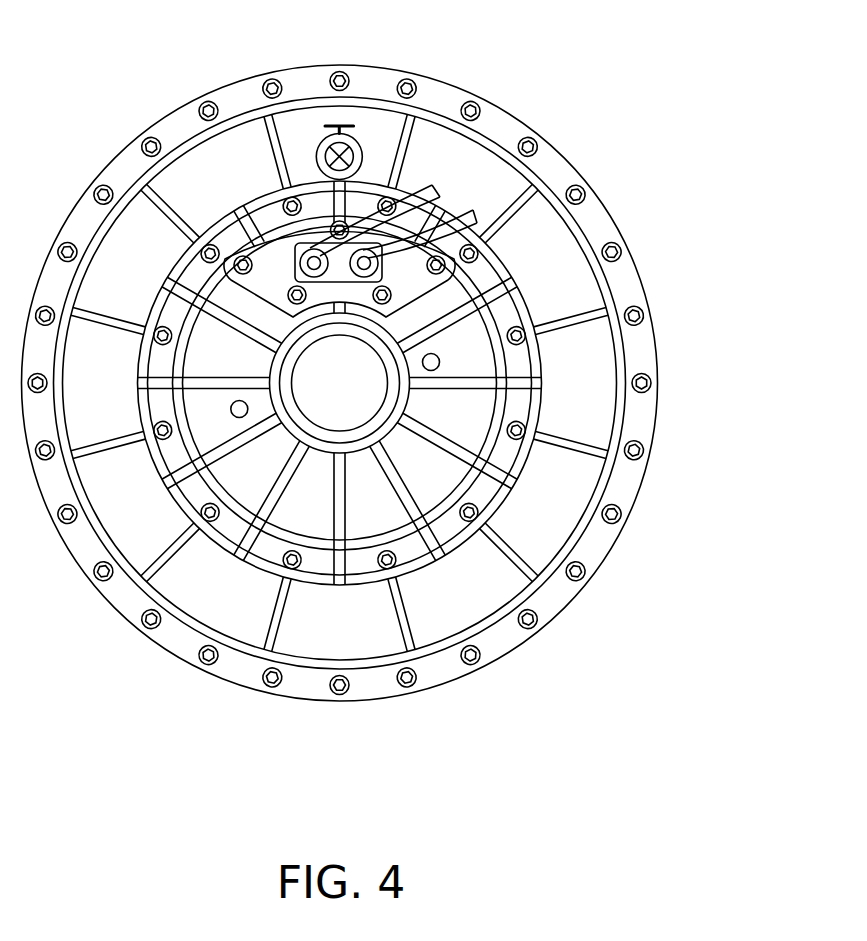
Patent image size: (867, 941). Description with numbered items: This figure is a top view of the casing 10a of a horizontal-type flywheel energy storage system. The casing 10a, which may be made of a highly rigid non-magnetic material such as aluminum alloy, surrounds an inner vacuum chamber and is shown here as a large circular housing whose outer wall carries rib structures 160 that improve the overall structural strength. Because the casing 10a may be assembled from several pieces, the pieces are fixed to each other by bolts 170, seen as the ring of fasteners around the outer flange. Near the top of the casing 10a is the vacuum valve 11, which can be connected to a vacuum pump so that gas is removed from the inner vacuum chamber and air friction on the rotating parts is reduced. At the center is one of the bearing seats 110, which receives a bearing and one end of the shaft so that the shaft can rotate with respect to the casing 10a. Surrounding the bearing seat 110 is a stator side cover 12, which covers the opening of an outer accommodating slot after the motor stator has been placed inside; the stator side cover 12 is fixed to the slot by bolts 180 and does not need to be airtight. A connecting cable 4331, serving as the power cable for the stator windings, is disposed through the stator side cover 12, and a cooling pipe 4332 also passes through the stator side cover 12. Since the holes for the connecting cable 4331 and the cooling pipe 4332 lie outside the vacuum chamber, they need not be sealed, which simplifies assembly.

The casing 10a is at (580, 177).
The vacuum valve 11 is at (355, 140).
The stator side cover 12 is at (370, 517).
The bearing seat 110 is at (323, 445).
The rib structure 160 is at (502, 543).
The bolt 170 is at (636, 452).
The bolt 180 is at (386, 562).
The connecting cable 4331 is at (427, 185).
The cooling pipe 4332 is at (440, 362).